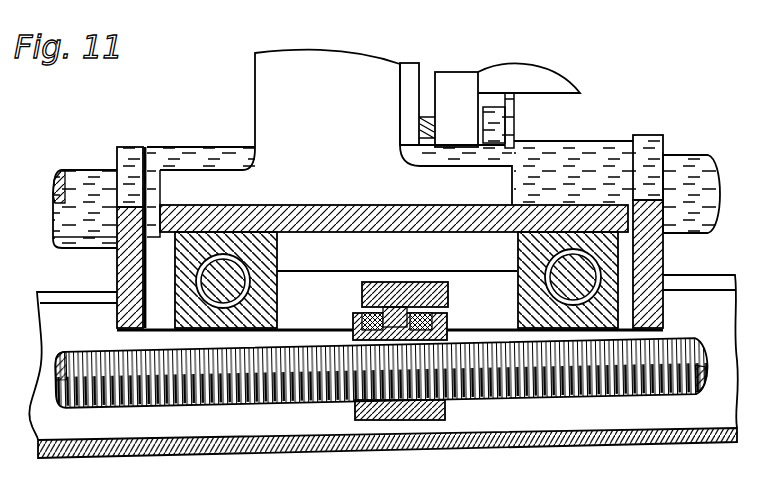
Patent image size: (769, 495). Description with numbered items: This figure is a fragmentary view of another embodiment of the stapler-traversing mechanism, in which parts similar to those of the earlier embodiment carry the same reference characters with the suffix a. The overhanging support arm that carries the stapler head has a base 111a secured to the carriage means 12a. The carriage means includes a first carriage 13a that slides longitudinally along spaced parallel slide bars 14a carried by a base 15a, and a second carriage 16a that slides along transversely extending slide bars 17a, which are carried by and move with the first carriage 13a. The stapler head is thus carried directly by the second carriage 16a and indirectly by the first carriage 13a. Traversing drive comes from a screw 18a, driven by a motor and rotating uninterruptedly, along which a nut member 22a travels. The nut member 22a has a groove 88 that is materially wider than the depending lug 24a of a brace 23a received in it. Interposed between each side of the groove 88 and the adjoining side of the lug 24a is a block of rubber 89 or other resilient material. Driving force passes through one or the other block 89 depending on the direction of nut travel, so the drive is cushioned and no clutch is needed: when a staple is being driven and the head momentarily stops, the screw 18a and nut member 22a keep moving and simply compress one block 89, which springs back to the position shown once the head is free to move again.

The carriage means 12a is at (154, 140).
The base 111a is at (250, 102).
The second carriage 16a is at (347, 212).
The first carriage 13a is at (603, 152).
The slide bar 14a is at (690, 182).
The slide bar 17a is at (222, 283).
The brace 23a is at (372, 283).
The block of rubber 89 is at (401, 312).
The depending lug 24a is at (407, 313).
The groove 88 is at (366, 308).
The nut member 22a is at (447, 414).
The screw 18a is at (627, 375).
The base 15a is at (532, 448).